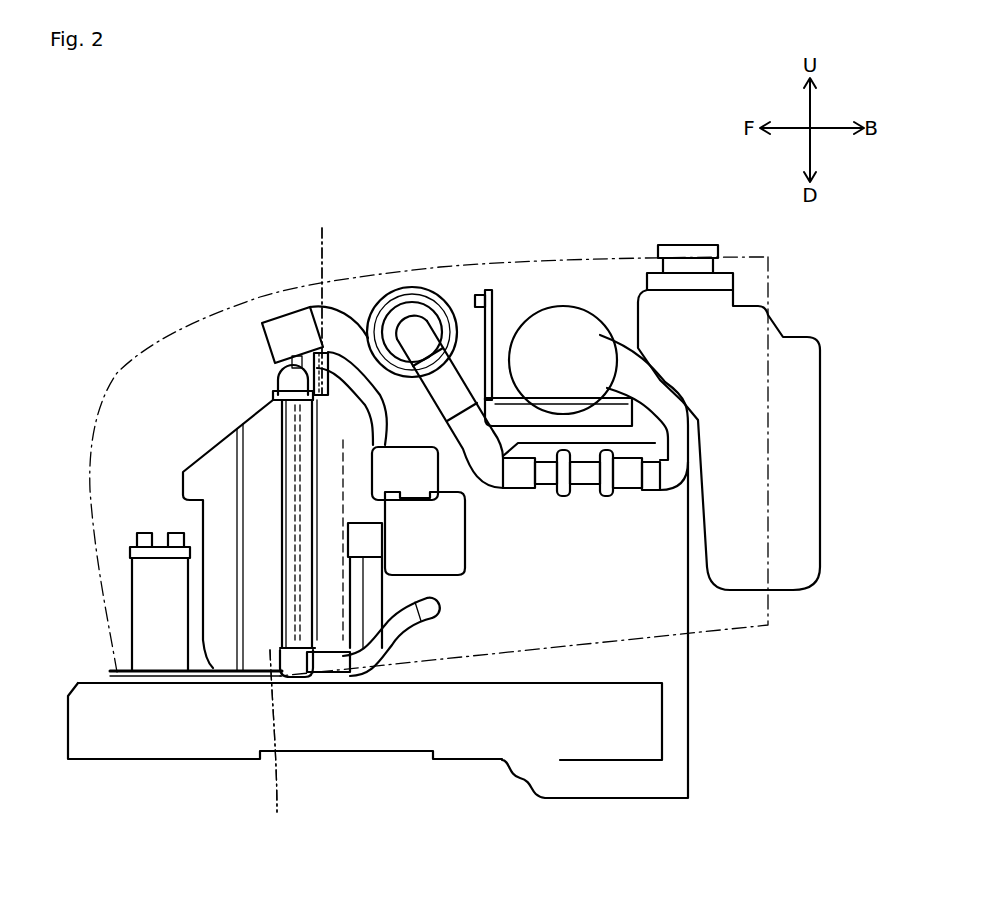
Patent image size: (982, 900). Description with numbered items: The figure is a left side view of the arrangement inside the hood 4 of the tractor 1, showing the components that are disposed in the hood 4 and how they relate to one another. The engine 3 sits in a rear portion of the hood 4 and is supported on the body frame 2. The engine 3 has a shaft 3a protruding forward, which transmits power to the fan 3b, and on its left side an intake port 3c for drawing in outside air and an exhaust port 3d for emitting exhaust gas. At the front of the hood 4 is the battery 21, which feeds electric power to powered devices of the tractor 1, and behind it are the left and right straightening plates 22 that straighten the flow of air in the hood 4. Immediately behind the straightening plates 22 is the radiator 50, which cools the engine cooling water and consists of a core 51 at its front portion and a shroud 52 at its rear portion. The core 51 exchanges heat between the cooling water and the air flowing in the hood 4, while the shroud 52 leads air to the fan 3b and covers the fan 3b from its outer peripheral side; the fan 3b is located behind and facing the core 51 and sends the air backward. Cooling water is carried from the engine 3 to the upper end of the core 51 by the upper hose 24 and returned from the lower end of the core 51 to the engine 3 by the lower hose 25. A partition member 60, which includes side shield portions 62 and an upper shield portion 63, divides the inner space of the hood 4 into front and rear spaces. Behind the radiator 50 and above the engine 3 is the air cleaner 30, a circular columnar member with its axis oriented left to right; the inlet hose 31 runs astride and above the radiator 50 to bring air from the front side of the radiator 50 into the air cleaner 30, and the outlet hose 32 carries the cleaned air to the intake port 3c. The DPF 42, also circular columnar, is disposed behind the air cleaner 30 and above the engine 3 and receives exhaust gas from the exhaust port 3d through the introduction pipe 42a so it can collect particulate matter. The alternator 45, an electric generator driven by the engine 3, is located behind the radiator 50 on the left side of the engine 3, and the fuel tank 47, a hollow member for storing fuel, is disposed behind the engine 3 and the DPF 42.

The tractor 1 is at (64, 162).
The body frame 2 is at (174, 748).
The engine 3 is at (686, 664).
The shaft 3a is at (390, 640).
The fan 3b is at (365, 648).
The intake port 3c is at (543, 481).
The exhaust port 3d is at (627, 481).
The hood 4 is at (212, 330).
The battery 21 is at (140, 622).
The straightening plates 22 is at (183, 487).
The upper hose 24 is at (337, 385).
The lower hose 25 is at (430, 612).
The air cleaner 30 is at (382, 300).
The inlet hose 31 is at (273, 328).
The outlet hose 32 is at (512, 478).
The DPF (Diesel Particulate Filter) 42 is at (562, 322).
The introduction pipe 42a is at (637, 393).
The alternator 45 is at (443, 548).
The fuel tank 47 is at (805, 417).
The radiator 50 is at (280, 452).
The core 51 is at (291, 423).
The shroud 52 is at (327, 645).
The partition member 60 is at (289, 532).
The side shield portions 62 is at (267, 745).
The upper shield portion 63 is at (312, 282).